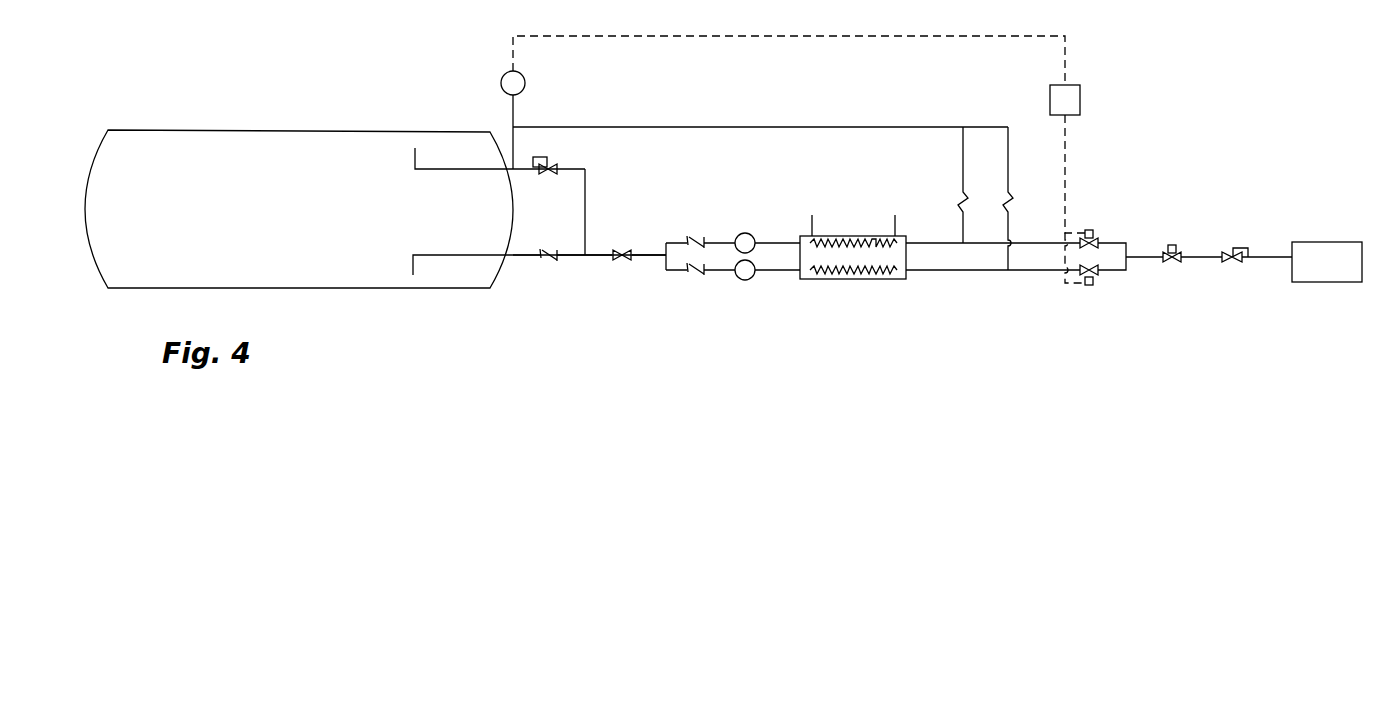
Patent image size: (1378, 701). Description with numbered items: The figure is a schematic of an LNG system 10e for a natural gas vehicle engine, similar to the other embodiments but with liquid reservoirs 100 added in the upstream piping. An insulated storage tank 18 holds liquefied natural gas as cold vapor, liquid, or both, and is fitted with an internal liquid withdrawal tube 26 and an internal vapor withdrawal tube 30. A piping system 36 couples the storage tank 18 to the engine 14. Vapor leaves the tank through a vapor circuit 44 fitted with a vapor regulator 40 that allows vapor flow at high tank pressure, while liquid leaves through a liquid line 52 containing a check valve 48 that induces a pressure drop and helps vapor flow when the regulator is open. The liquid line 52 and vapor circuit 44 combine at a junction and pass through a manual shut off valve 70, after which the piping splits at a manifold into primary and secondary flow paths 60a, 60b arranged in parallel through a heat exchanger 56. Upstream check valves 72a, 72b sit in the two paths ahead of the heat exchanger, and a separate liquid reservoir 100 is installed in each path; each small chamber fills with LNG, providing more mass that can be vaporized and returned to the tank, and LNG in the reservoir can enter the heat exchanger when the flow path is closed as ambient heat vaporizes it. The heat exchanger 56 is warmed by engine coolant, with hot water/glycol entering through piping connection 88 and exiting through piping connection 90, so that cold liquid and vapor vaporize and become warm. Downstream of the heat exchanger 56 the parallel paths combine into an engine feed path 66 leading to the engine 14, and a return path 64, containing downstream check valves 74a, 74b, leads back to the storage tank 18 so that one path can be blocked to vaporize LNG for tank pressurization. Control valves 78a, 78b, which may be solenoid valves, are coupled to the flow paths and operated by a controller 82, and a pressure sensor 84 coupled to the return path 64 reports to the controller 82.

The system 10e is at (447, 317).
The engine 14 is at (1302, 242).
The insulated storage tank 18 is at (325, 127).
The internal liquid withdrawal tube 26 is at (413, 270).
The internal vapor withdrawal tube 30 is at (413, 157).
The piping system 36 is at (838, 108).
The vapor regulator 40 is at (550, 158).
The vapor circuit 44 is at (585, 190).
The check valve 48 is at (549, 264).
The liquid line 52 is at (519, 258).
The heat exchanger 56 is at (805, 280).
The primary flow path 60a is at (858, 240).
The secondary flow path 60b is at (853, 277).
The return path 64 is at (757, 127).
The engine feed path 66 is at (1132, 270).
The manual shut off valve 70 is at (625, 265).
The upstream check valve 72a is at (700, 233).
The upstream check valve 72b is at (702, 280).
The downstream check valve 74a is at (956, 200).
The downstream check valve 74b is at (1010, 200).
The control valve 78a is at (1089, 229).
The control valve 78b is at (1089, 290).
The controller 82 is at (1082, 100).
The pressure sensor 84 is at (500, 82).
The piping connection 88 is at (812, 224).
The piping connection 90 is at (897, 231).
The liquid reservoirs 100 is at (750, 282).